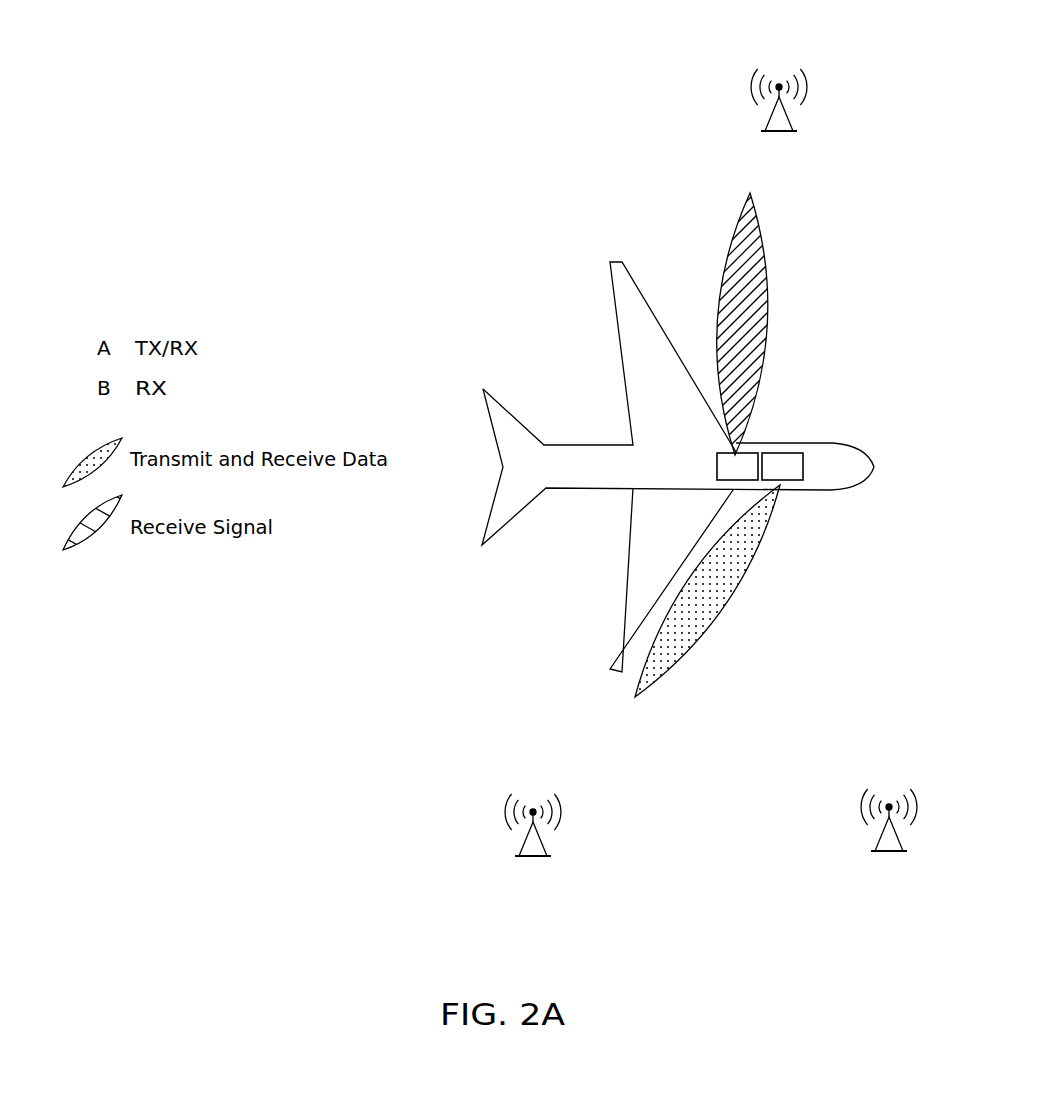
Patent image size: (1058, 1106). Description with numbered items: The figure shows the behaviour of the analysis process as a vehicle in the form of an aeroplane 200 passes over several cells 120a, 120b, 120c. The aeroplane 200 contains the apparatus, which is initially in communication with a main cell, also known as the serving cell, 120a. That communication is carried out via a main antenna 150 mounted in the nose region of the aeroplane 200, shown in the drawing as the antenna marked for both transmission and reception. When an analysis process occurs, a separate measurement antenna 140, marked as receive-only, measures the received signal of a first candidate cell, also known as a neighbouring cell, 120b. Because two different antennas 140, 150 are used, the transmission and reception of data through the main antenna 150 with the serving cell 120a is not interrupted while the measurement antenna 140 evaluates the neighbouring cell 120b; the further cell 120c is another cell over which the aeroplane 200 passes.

The aeroplane 200 is at (882, 437).
The measurement antenna 140 is at (748, 458).
The main antenna 150 is at (797, 480).
The main cell 120a is at (535, 902).
The first candidate cell 120b is at (778, 70).
The cell 120c is at (890, 898).